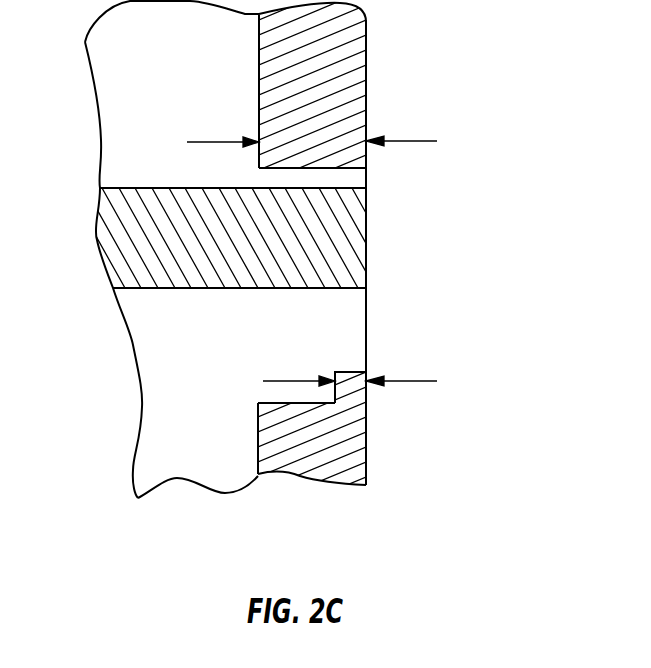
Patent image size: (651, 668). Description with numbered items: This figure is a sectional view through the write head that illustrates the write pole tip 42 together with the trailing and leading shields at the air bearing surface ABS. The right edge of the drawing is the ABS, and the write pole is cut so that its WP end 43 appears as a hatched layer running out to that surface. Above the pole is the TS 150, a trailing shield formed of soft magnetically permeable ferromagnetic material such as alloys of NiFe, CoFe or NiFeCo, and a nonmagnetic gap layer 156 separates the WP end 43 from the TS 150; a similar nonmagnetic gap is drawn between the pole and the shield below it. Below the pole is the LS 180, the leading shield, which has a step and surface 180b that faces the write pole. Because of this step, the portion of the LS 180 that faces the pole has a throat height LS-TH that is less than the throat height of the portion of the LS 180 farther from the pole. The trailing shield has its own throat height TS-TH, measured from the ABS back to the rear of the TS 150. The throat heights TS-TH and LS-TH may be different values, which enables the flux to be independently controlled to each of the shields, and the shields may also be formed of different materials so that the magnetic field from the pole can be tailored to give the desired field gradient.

The WP tip 42 is at (107, 243).
The WP end 43 is at (365, 250).
The TS 150 is at (357, 84).
The nonmagnetic gap layer 156 is at (355, 177).
The LS 180 is at (357, 432).
The step and surface 180b is at (267, 402).
The air bearing surface ABS is at (367, 37).
The trailing shield throat height TS-TH is at (350, 143).
The leading shield throat height LS-TH is at (388, 383).